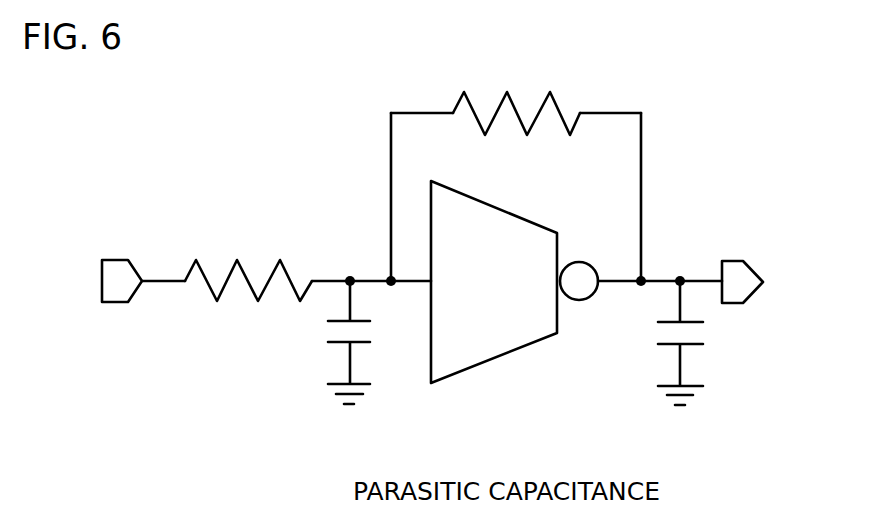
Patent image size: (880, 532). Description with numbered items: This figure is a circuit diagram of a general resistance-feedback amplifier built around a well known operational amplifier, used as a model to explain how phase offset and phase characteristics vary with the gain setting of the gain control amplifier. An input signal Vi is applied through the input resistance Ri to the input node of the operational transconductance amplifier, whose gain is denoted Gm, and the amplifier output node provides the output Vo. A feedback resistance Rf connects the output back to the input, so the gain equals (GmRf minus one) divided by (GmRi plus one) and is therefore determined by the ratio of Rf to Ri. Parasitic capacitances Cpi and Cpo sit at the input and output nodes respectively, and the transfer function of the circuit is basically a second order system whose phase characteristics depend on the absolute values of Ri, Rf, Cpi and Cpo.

The input voltage terminal Vi is at (101, 282).
The output voltage terminal Vo is at (771, 283).
The input resistance Ri is at (248, 264).
The feedback resistance Rf is at (516, 95).
The gain of the operational transconductance amplifier Gm is at (514, 282).
The parasitic capacitance in input node Cpi is at (388, 362).
The parasitic capacitance in output node Cpo is at (639, 365).